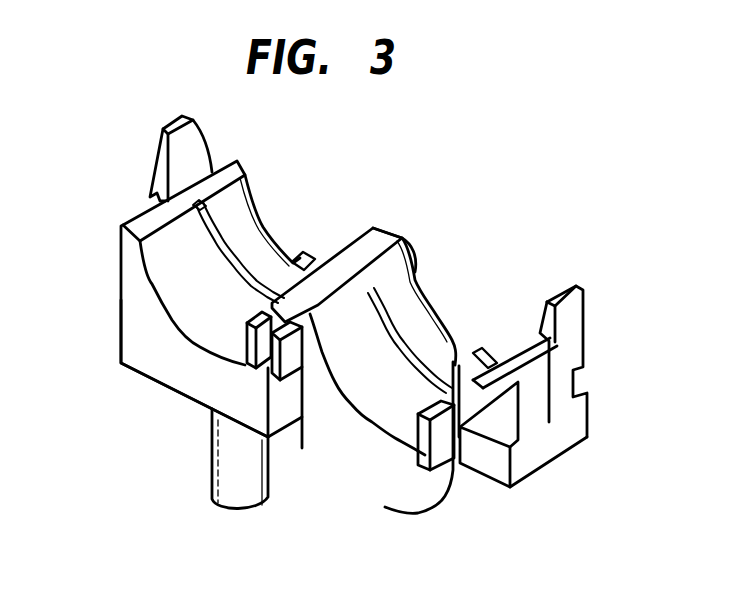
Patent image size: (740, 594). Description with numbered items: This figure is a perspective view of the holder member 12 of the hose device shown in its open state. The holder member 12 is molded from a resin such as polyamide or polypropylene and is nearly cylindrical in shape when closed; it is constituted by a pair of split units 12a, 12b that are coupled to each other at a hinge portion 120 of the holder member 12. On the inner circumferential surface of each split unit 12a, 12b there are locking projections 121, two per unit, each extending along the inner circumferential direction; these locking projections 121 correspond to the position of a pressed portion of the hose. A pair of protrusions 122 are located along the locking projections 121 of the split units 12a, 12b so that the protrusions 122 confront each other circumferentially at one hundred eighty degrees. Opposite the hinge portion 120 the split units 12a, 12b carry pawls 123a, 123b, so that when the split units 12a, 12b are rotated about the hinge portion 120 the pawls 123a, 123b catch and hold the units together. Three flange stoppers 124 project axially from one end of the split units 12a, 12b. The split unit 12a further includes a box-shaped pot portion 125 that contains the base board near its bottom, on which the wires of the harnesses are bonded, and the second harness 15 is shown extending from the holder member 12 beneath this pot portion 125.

The holder member 12 is at (272, 200).
The split unit 12a is at (137, 267).
The split unit 12b is at (390, 430).
The second harness 15 is at (213, 473).
The hinge portion 120 is at (427, 260).
The locking projection 121 is at (223, 267).
The protrusion 122 is at (320, 248).
The pawl 123a is at (153, 178).
The pawl 123b is at (517, 387).
The flange stopper 124 is at (252, 370).
The box-shaped pot portion 125 is at (152, 362).